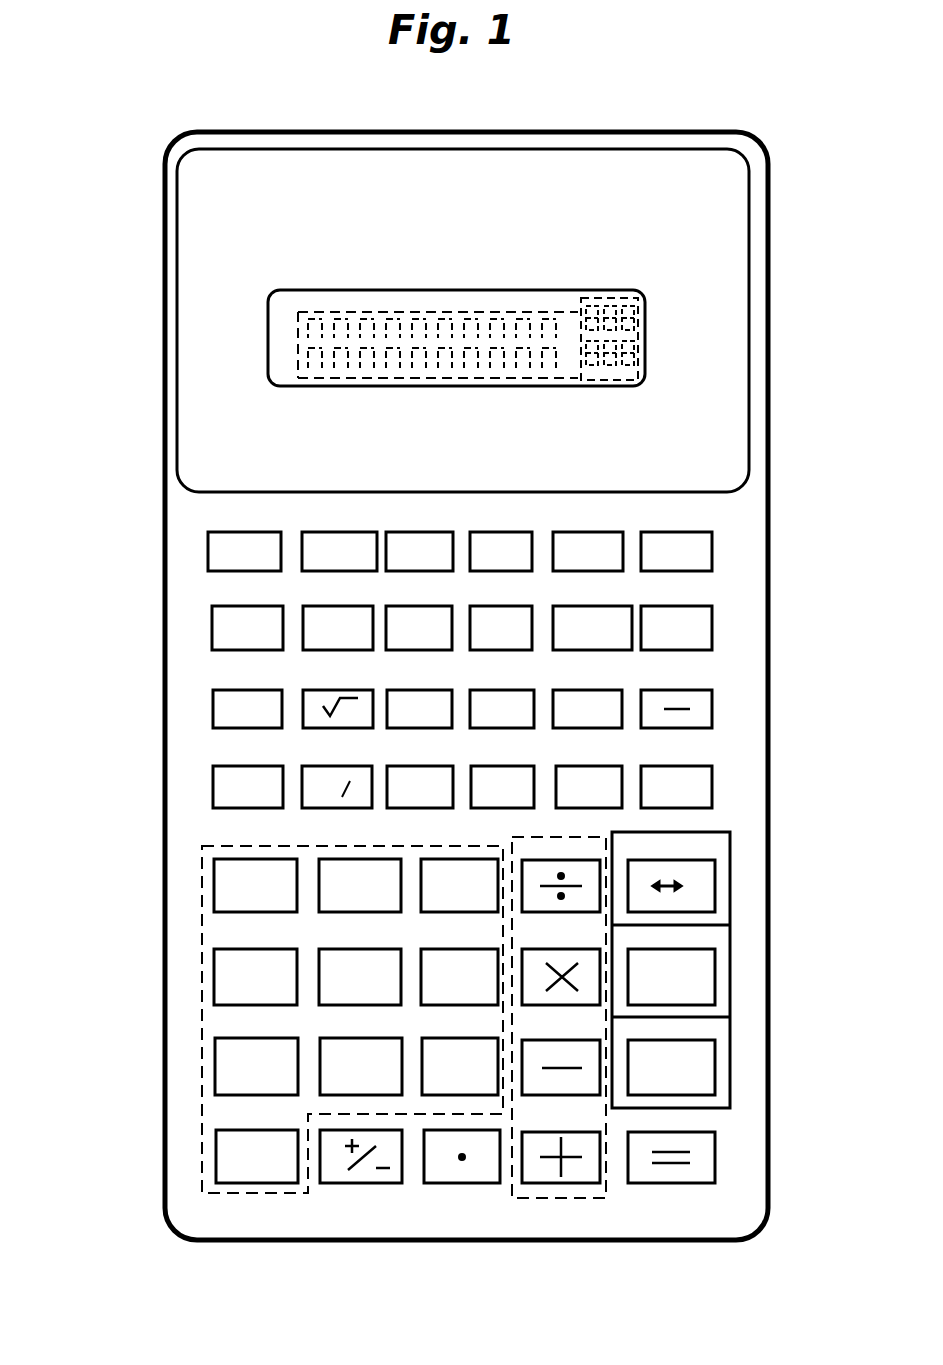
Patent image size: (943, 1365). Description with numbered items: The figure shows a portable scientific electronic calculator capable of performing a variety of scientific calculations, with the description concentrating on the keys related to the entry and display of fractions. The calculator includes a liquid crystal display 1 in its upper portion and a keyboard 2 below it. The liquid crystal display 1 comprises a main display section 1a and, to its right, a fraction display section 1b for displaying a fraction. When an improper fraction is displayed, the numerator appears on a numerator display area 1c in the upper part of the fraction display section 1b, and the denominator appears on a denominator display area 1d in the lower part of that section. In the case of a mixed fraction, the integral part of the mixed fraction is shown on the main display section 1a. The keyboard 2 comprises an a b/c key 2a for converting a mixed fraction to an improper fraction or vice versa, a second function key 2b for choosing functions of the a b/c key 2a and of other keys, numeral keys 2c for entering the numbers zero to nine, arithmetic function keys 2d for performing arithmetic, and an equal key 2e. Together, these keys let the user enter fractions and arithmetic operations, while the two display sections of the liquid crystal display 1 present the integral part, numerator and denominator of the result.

The liquid crystal display 1 is at (303, 292).
The main display section 1a is at (300, 318).
The fraction display section 1b is at (618, 382).
The numerator display area 1c is at (630, 318).
The denominator display area 1d is at (632, 356).
The keyboard 2 is at (718, 798).
The a b/c key 2a is at (300, 808).
The second function key 2b is at (208, 550).
The numeral keys 2c is at (202, 985).
The arithmetic function keys 2d is at (588, 1198).
The equal key 2e is at (715, 1160).